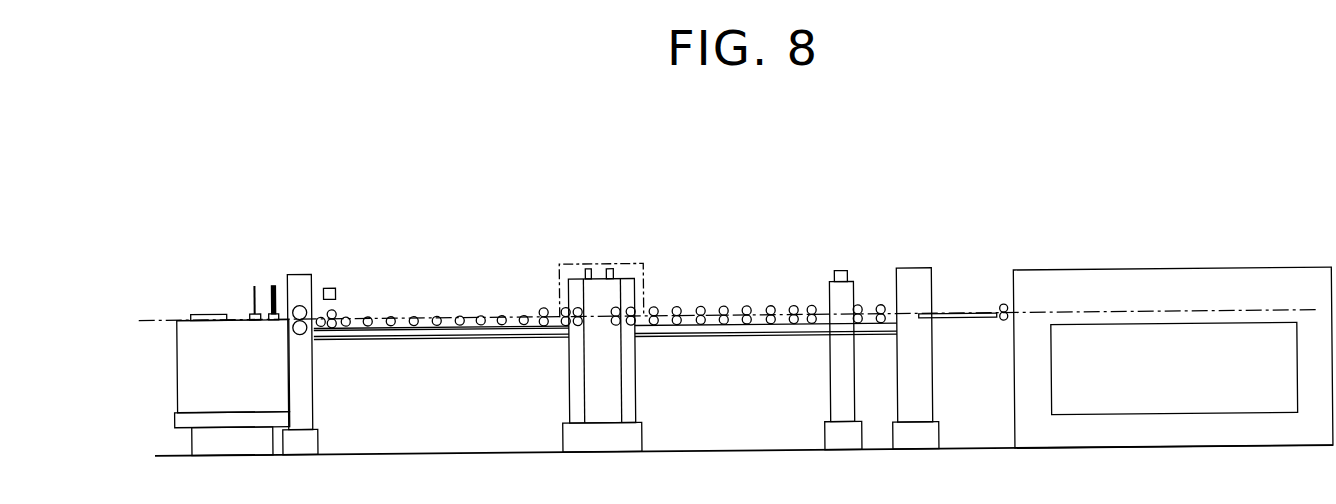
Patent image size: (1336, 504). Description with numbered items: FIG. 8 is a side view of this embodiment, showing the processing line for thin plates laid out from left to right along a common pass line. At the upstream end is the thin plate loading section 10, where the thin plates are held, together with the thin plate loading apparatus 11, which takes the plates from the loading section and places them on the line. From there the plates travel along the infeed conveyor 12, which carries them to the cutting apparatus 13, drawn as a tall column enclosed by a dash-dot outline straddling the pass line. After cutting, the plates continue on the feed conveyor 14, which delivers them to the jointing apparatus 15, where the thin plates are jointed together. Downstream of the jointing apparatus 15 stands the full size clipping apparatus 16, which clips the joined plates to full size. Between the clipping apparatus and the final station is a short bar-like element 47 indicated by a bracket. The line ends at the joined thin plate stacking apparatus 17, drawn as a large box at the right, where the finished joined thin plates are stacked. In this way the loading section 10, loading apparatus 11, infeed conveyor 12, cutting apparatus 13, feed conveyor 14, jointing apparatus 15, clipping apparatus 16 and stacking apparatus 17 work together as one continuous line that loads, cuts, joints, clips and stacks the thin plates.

The thin plate loading section 10 is at (192, 349).
The thin plate loading apparatus 11 is at (272, 267).
The infeed conveyor 12 is at (567, 349).
The cutting apparatus 13 is at (602, 266).
The feed conveyor 14 is at (897, 347).
The jointing apparatus 15 is at (843, 262).
The full size clipping apparatus 16 is at (920, 262).
The joined thin plate stacking apparatus 17 is at (1180, 278).
The billet feed bar 47 is at (1008, 304).